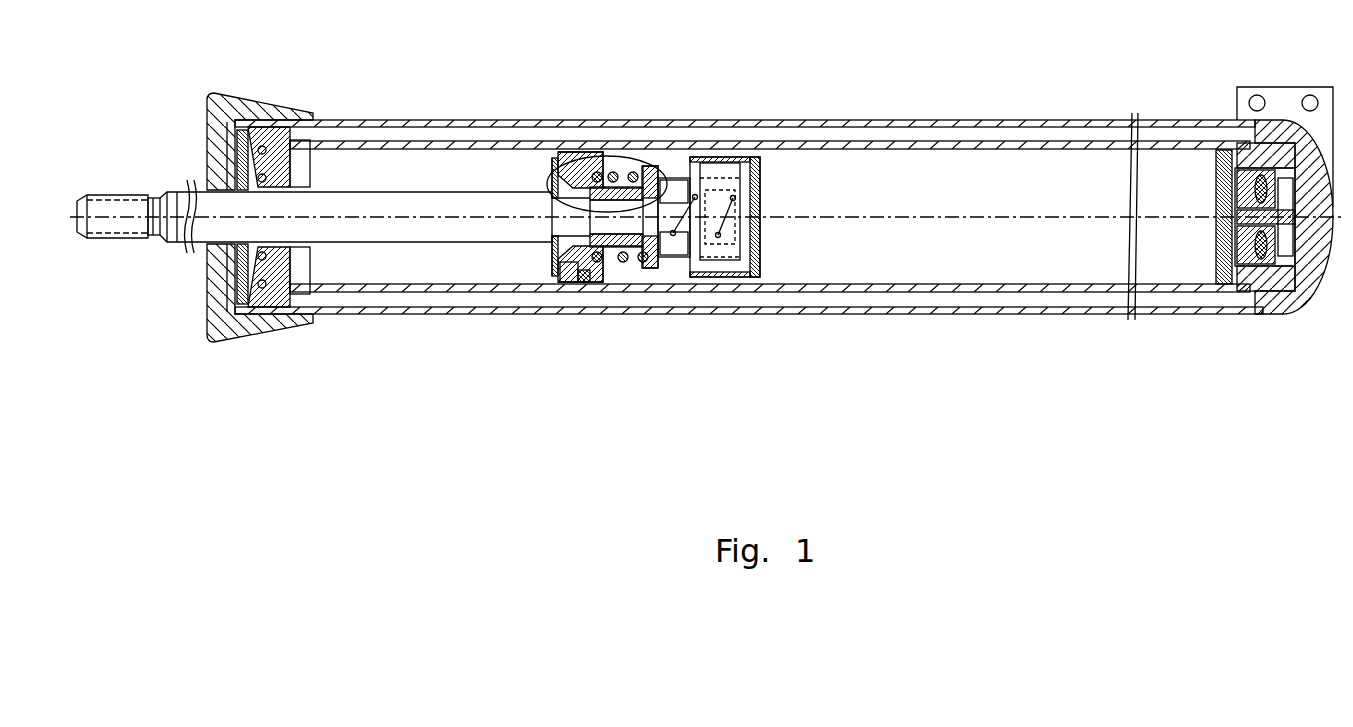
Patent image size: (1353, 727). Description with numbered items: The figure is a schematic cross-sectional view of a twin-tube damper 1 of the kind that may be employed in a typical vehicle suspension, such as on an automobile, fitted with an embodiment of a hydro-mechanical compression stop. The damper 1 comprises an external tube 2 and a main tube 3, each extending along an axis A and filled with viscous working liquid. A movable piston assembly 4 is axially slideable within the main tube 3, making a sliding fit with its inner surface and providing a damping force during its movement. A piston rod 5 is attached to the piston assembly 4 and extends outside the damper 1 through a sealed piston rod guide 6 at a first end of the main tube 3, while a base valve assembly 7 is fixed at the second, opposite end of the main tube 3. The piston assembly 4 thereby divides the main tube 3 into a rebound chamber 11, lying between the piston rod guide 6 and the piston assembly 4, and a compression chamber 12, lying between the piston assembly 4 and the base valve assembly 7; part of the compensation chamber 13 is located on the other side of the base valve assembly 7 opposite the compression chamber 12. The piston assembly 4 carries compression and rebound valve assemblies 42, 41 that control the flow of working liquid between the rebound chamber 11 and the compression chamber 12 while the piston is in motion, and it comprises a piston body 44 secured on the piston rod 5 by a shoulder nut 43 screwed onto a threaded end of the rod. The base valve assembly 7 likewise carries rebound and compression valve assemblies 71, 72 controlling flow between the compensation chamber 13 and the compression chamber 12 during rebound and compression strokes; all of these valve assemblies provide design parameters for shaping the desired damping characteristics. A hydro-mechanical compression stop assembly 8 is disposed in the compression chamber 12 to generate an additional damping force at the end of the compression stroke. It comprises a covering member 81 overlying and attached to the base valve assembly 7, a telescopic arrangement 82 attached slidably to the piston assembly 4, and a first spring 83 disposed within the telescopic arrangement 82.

The twin-tube damper 1 is at (183, 295).
The rebound chamber 11 is at (395, 265).
The piston rod guide 6 is at (230, 320).
The piston rod 5 is at (279, 232).
The main tube 3 is at (885, 290).
The compression chamber 12 is at (1007, 270).
The compensation chamber 13 is at (955, 300).
The external tube 2 is at (1087, 312).
The compression valve assembly 72 is at (1287, 293).
The base valve assembly 7 is at (1255, 293).
The rebound valve assembly 71 is at (1230, 285).
The covering member 81 is at (1217, 265).
The piston assembly 4 is at (641, 273).
The compression valve assembly 42 is at (548, 240).
The rebound valve assembly 41 is at (574, 283).
The piston body 44 is at (582, 283).
The shoulder nut 43 is at (648, 283).
The axis A is at (468, 222).
The hydro-mechanical compression stop assembly 8 is at (738, 284).
The telescopic arrangement 82 is at (673, 260).
The first spring 83 is at (718, 262).